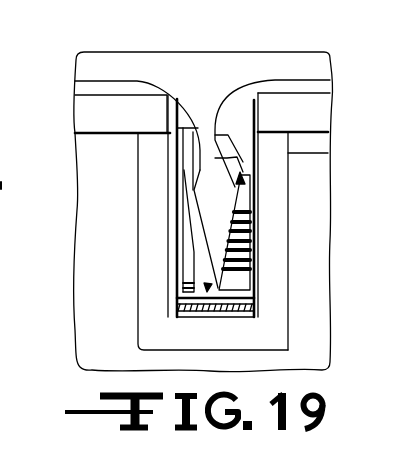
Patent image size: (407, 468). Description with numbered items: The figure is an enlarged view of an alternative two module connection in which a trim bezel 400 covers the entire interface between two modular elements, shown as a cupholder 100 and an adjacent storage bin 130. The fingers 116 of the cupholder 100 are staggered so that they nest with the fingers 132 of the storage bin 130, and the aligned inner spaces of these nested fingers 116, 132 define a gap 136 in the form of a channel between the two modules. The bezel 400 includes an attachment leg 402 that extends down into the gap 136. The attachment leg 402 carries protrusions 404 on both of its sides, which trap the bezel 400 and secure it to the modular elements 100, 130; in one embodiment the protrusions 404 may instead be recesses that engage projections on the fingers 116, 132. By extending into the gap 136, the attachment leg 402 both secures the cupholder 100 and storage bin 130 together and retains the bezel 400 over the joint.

The cupholder 100 is at (122, 241).
The fingers 116 is at (160, 299).
The storage bin 130 is at (300, 194).
The fingers 132 is at (230, 298).
The gap 136 is at (257, 272).
The bezel 400 is at (230, 66).
The attachment leg 402 is at (206, 317).
The protrusions 404 is at (237, 200).